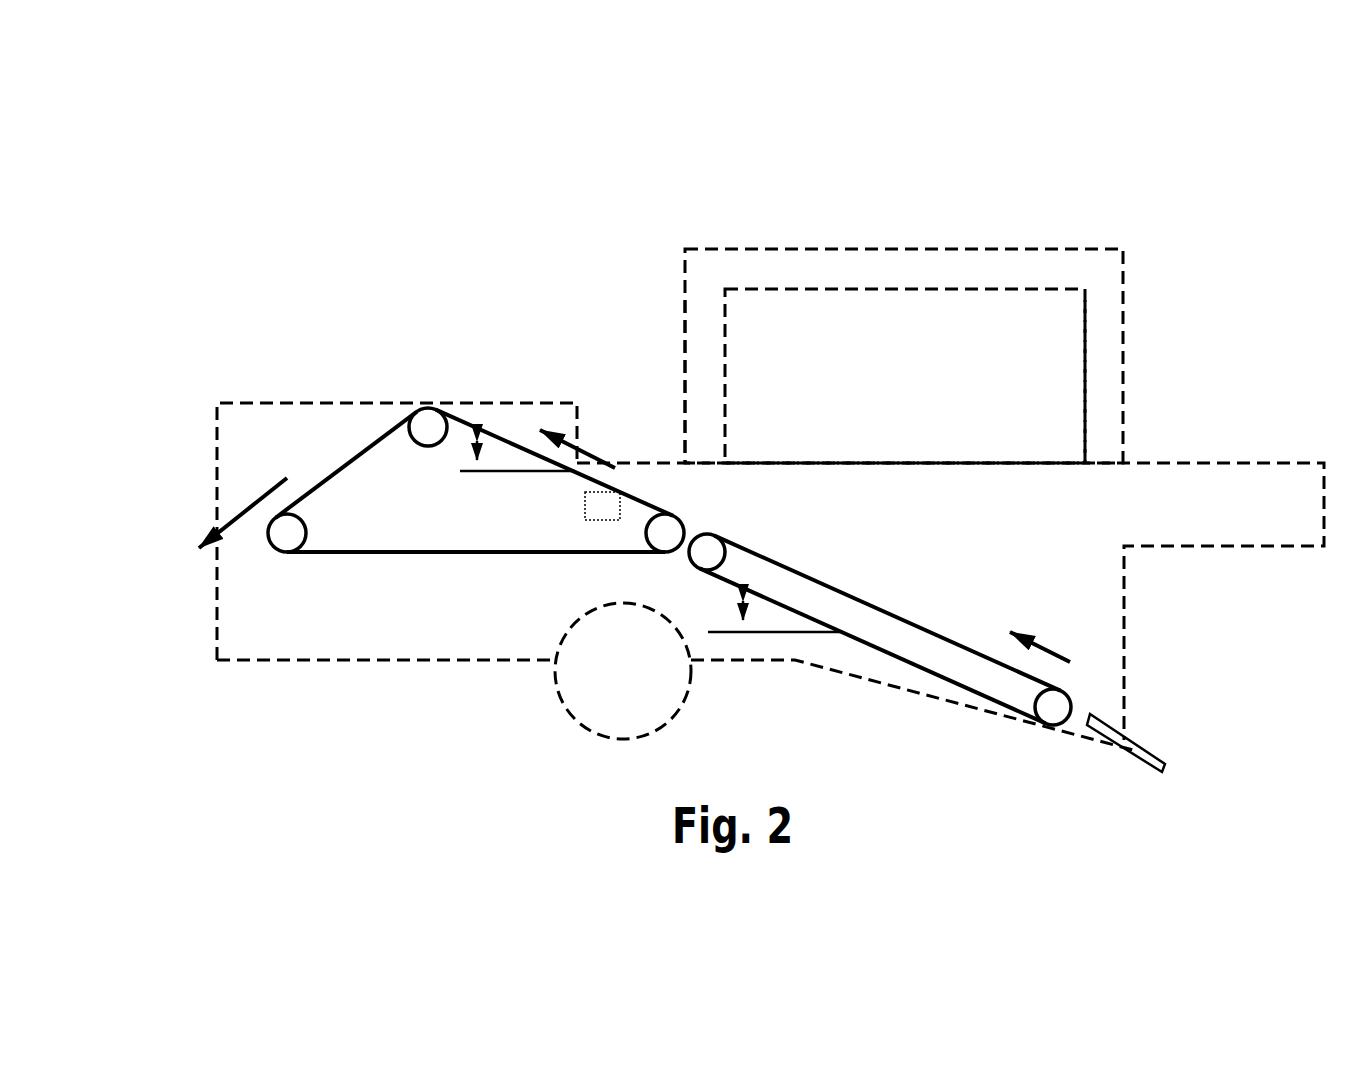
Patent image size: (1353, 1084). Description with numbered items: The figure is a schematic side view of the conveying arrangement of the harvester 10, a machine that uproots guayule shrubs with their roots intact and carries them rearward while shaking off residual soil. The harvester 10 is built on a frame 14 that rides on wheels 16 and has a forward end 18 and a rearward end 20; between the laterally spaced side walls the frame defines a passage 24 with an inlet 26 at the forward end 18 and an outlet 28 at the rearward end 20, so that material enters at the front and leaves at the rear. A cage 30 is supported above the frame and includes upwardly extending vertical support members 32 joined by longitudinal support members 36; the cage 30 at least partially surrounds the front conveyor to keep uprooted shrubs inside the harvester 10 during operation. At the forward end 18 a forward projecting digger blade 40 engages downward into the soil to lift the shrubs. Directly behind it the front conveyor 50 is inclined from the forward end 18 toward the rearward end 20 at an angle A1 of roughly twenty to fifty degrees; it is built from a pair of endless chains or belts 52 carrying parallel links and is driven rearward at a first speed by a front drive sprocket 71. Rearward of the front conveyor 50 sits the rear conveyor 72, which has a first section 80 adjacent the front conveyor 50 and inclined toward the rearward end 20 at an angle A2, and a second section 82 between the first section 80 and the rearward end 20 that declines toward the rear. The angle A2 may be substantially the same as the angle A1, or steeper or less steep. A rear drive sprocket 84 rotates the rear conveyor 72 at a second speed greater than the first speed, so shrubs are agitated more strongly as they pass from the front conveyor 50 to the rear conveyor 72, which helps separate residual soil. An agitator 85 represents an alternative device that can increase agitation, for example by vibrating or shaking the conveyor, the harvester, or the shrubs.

The harvester 10 is at (314, 277).
The frame 14 is at (343, 637).
The wheels 16 is at (617, 715).
The forward end 18 is at (1213, 624).
The rearward end 20 is at (180, 465).
The passage 24 is at (968, 566).
The inlet 26 is at (1150, 658).
The outlet 28 is at (204, 438).
The cage 30 is at (1063, 231).
The vertical support members 32 is at (702, 337).
The longitudinal support members 36 is at (805, 270).
The digger blade 40 is at (1137, 750).
The front conveyor 50 is at (880, 656).
The endless chains or belts 52 is at (802, 568).
The front drive sprocket 71 is at (1052, 707).
The rear conveyor 72 is at (529, 417).
The first section 80 is at (565, 480).
The second section 82 is at (359, 475).
The rear drive sprocket 84 is at (667, 528).
The agitator 85 is at (597, 543).
The incline angle of front conveyor A1 is at (771, 613).
The incline angle of first section A2 is at (517, 481).